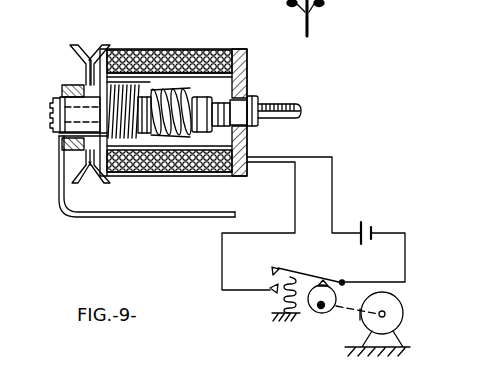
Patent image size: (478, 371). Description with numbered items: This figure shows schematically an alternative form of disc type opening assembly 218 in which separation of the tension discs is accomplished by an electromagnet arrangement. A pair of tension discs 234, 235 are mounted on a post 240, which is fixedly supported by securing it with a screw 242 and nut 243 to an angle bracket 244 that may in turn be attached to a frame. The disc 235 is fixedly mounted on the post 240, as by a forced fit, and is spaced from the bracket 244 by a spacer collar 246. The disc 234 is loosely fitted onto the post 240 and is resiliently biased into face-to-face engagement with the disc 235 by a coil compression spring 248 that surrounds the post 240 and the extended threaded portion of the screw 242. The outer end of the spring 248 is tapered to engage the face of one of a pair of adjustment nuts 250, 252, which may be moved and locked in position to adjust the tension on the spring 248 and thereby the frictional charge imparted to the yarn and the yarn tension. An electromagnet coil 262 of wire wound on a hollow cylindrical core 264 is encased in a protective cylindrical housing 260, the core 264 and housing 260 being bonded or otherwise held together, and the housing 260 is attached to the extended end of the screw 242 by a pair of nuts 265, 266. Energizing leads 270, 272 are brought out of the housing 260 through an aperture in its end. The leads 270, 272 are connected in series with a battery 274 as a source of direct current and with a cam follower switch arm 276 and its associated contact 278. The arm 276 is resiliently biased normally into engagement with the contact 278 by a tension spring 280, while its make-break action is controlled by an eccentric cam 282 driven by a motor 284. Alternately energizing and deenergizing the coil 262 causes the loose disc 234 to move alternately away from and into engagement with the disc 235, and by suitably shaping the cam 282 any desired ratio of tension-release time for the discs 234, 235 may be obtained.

The disc type opening assembly 218 is at (155, 40).
The tension disc 234 is at (103, 42).
The tension disc 235 is at (77, 42).
The post 240 is at (59, 132).
The screw 242 is at (297, 103).
The nut 243 is at (142, 144).
The angle bracket 244 is at (75, 218).
The spacer collar 246 is at (68, 80).
The coil compression spring 248 is at (172, 213).
The adjustment nut 250 is at (192, 147).
The adjustment nut 252 is at (232, 173).
The cylindrical housing 260 is at (228, 48).
The electromagnet coil 262 is at (191, 48).
The hollow cylindrical core 264 is at (243, 89).
The nut 265 is at (247, 137).
The nut 266 is at (258, 123).
The energizing lead 270 is at (252, 233).
The energizing lead 272 is at (333, 193).
The battery 274 is at (371, 232).
The cam follower switch arm 276 is at (317, 276).
The contact 278 is at (268, 290).
The tension spring 280 is at (284, 302).
The cam 282 is at (321, 313).
The motor 284 is at (400, 302).